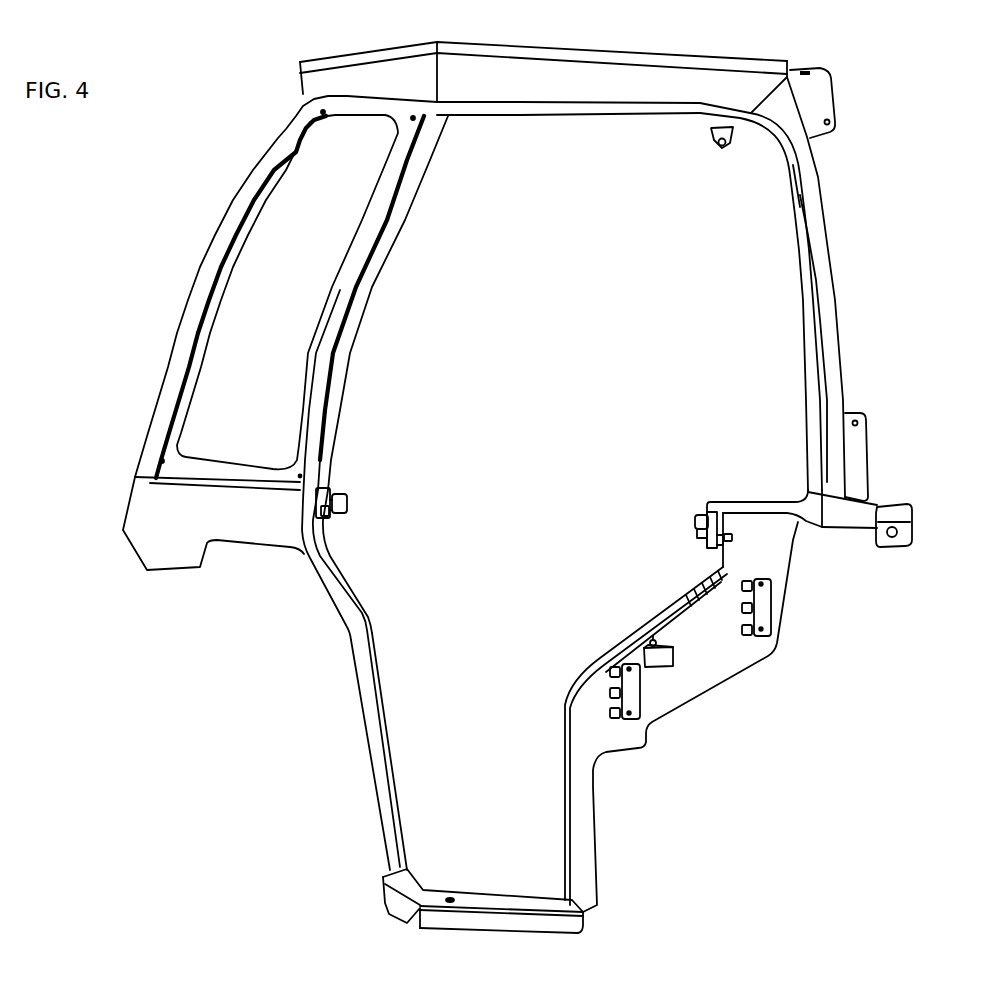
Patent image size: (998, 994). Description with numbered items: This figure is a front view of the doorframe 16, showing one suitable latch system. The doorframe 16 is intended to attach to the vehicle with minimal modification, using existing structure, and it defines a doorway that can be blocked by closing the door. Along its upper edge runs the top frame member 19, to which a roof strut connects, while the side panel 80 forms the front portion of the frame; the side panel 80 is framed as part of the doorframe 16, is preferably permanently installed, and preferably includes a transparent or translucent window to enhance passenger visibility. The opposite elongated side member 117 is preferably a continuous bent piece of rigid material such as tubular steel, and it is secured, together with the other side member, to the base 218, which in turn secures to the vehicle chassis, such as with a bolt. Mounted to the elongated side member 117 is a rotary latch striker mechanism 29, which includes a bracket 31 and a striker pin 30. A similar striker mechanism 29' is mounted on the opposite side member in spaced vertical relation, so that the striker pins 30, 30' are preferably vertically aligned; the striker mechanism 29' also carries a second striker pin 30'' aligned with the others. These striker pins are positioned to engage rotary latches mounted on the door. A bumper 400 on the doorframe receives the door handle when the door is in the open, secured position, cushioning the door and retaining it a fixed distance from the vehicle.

The doorframe 16 is at (924, 145).
The top frame member 19 is at (627, 80).
The side panel 80 is at (243, 247).
The elongated side member 117 is at (324, 350).
The rotary latch striker mechanism 29 is at (345, 483).
The striker pin 30 is at (354, 513).
The bracket 31 is at (333, 518).
The striker mechanism 29' is at (688, 512).
The striker pin 30' is at (676, 543).
The second striker pin 30'' is at (750, 538).
The bumper 400 is at (905, 508).
The base 218 is at (490, 894).